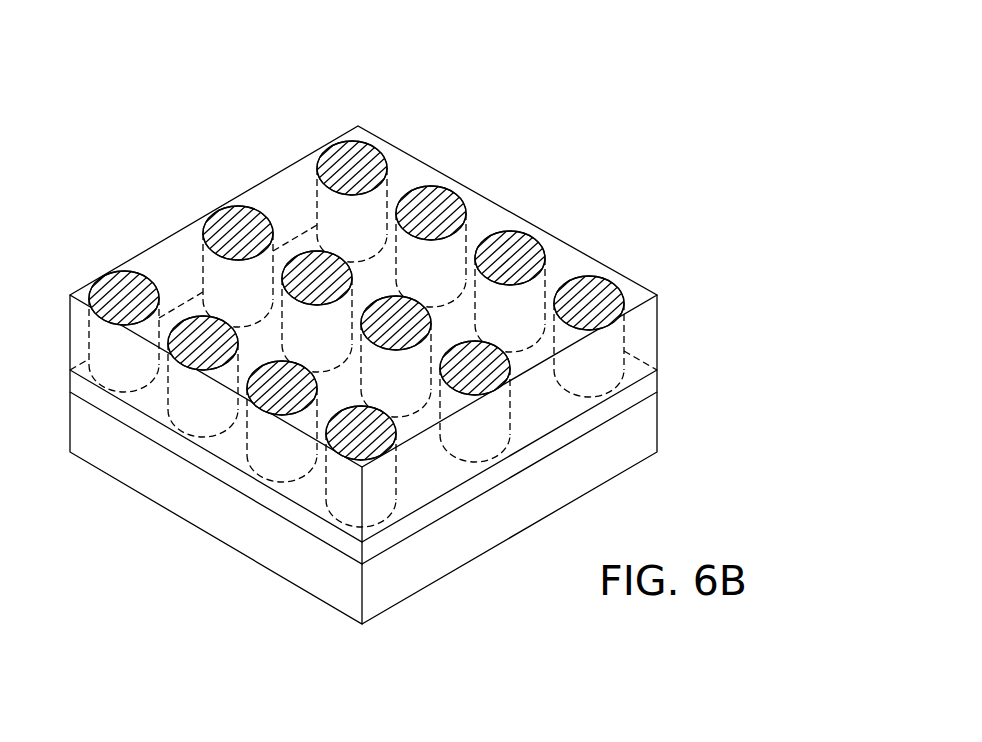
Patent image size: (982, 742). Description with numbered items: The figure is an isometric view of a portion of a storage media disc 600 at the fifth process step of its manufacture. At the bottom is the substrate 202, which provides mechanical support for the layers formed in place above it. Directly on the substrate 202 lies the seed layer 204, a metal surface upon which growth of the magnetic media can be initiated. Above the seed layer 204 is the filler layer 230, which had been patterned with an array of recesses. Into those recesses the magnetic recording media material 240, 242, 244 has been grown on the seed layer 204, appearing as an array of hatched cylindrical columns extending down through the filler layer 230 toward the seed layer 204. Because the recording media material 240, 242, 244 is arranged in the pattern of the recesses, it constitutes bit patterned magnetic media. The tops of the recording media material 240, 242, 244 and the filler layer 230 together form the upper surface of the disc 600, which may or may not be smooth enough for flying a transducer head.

The disc 600 is at (709, 120).
The magnetic recording media material 244 is at (435, 200).
The magnetic recording media material 242 is at (510, 250).
The magnetic recording media material 240 is at (590, 292).
The filler layer 230 is at (657, 333).
The seed layer 204 is at (657, 379).
The substrate 202 is at (657, 425).